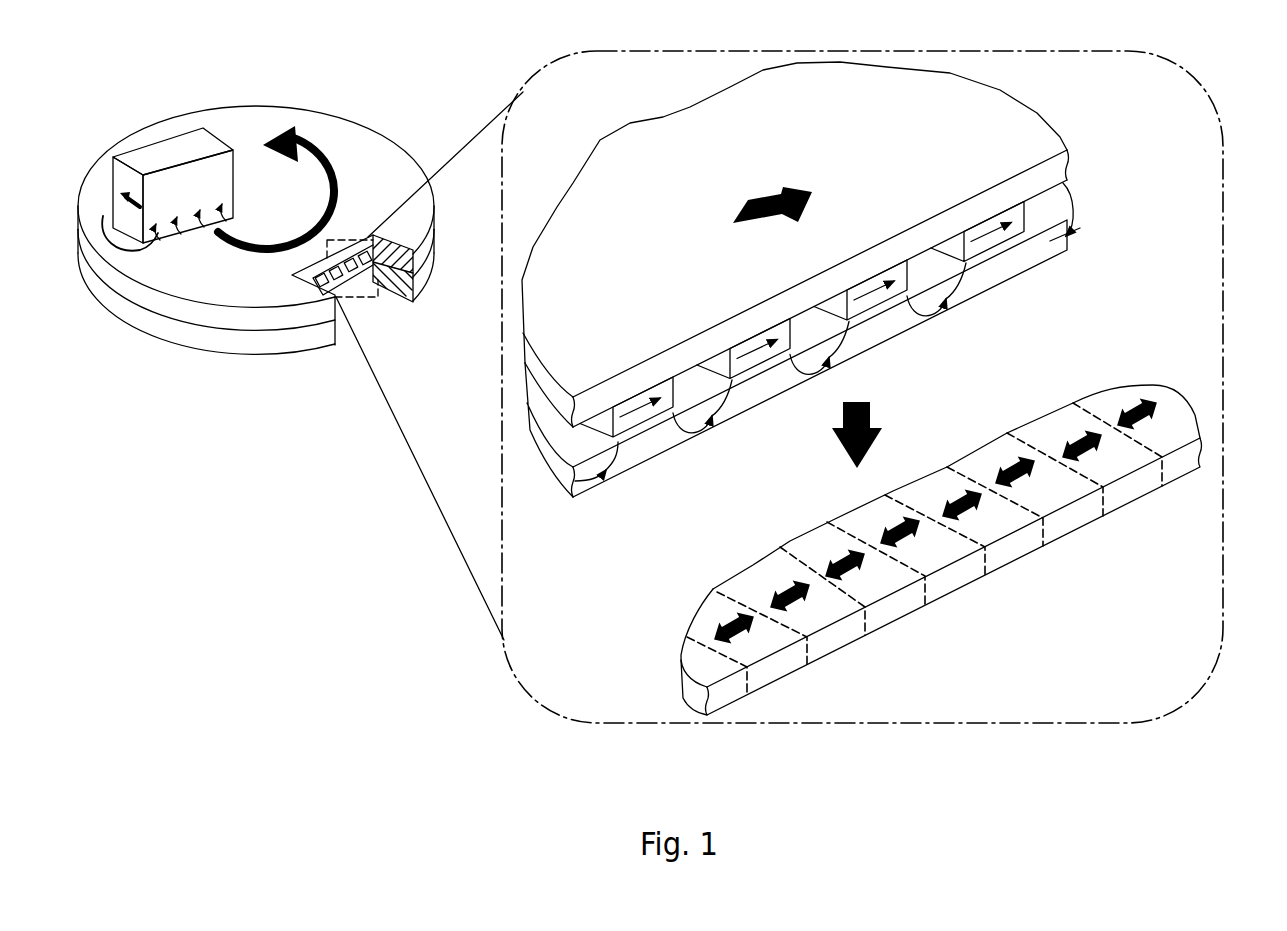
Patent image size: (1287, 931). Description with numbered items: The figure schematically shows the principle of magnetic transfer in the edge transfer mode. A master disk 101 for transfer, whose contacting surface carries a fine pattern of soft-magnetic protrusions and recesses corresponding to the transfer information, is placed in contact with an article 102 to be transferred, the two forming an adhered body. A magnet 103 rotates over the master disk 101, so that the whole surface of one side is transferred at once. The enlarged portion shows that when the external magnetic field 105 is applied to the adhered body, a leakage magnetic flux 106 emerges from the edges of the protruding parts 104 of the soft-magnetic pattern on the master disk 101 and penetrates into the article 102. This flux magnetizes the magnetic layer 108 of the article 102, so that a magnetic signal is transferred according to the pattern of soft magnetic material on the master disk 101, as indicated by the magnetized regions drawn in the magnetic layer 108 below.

The master disk for transfer 101 is at (307, 118).
The article to be transferred 102 is at (160, 325).
The magnet 103 is at (175, 150).
The protruding parts 104 is at (872, 298).
The external magnetic field 105 is at (786, 183).
The leakage magnetic flux 106 is at (965, 287).
The magnetic layer 108 is at (938, 557).